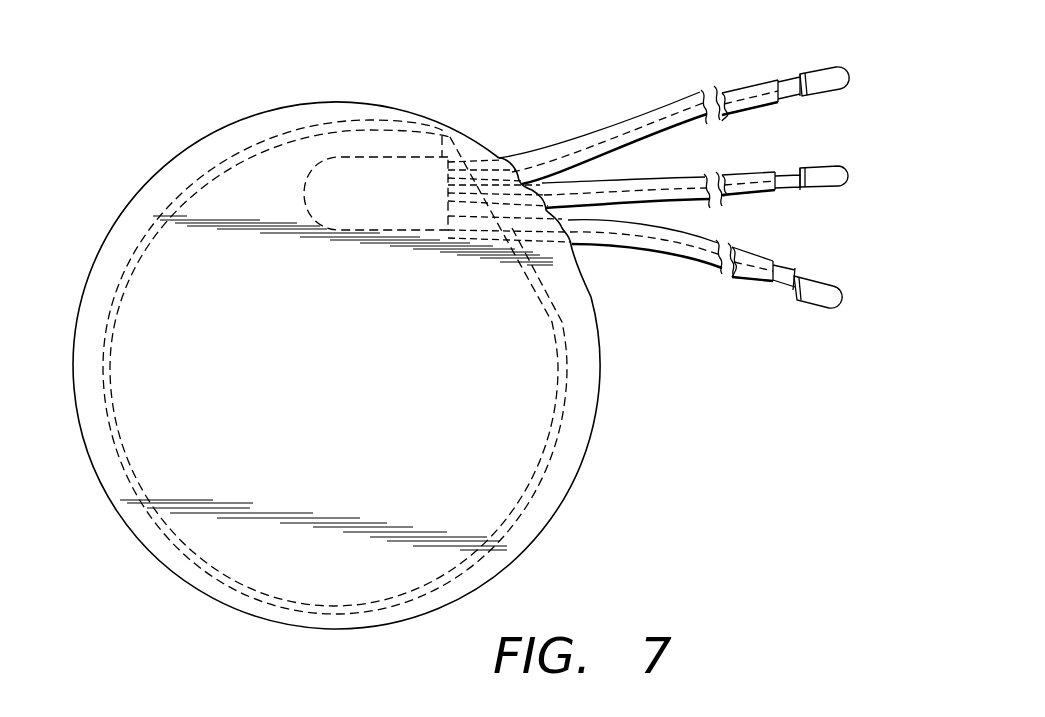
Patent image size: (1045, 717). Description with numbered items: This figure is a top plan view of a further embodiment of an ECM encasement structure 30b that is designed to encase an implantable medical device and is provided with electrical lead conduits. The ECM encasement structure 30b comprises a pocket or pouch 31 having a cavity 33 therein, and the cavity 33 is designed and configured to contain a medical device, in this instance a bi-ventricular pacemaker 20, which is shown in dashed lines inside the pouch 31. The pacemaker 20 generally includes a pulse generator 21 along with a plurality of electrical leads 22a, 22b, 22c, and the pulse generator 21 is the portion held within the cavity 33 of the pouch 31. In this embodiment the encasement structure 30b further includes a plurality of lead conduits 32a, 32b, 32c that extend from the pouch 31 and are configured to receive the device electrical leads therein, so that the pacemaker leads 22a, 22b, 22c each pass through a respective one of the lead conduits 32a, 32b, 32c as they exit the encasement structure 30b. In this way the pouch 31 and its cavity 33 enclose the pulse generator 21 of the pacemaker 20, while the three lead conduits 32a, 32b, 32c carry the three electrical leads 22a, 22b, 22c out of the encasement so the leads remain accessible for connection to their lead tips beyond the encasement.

The ECM encasement structure 30b is at (461, 333).
The pocket or pouch 31 is at (597, 322).
The cavity 33 is at (572, 380).
The bi-ventricular pacemaker 20 is at (555, 447).
The pulse generator 21 is at (478, 488).
The lead conduit 32a is at (658, 108).
The lead conduit 32b is at (683, 177).
The lead conduit 32c is at (670, 261).
The electrical lead 22c is at (753, 73).
The electrical lead 22b is at (749, 169).
The electrical lead 22a is at (757, 252).